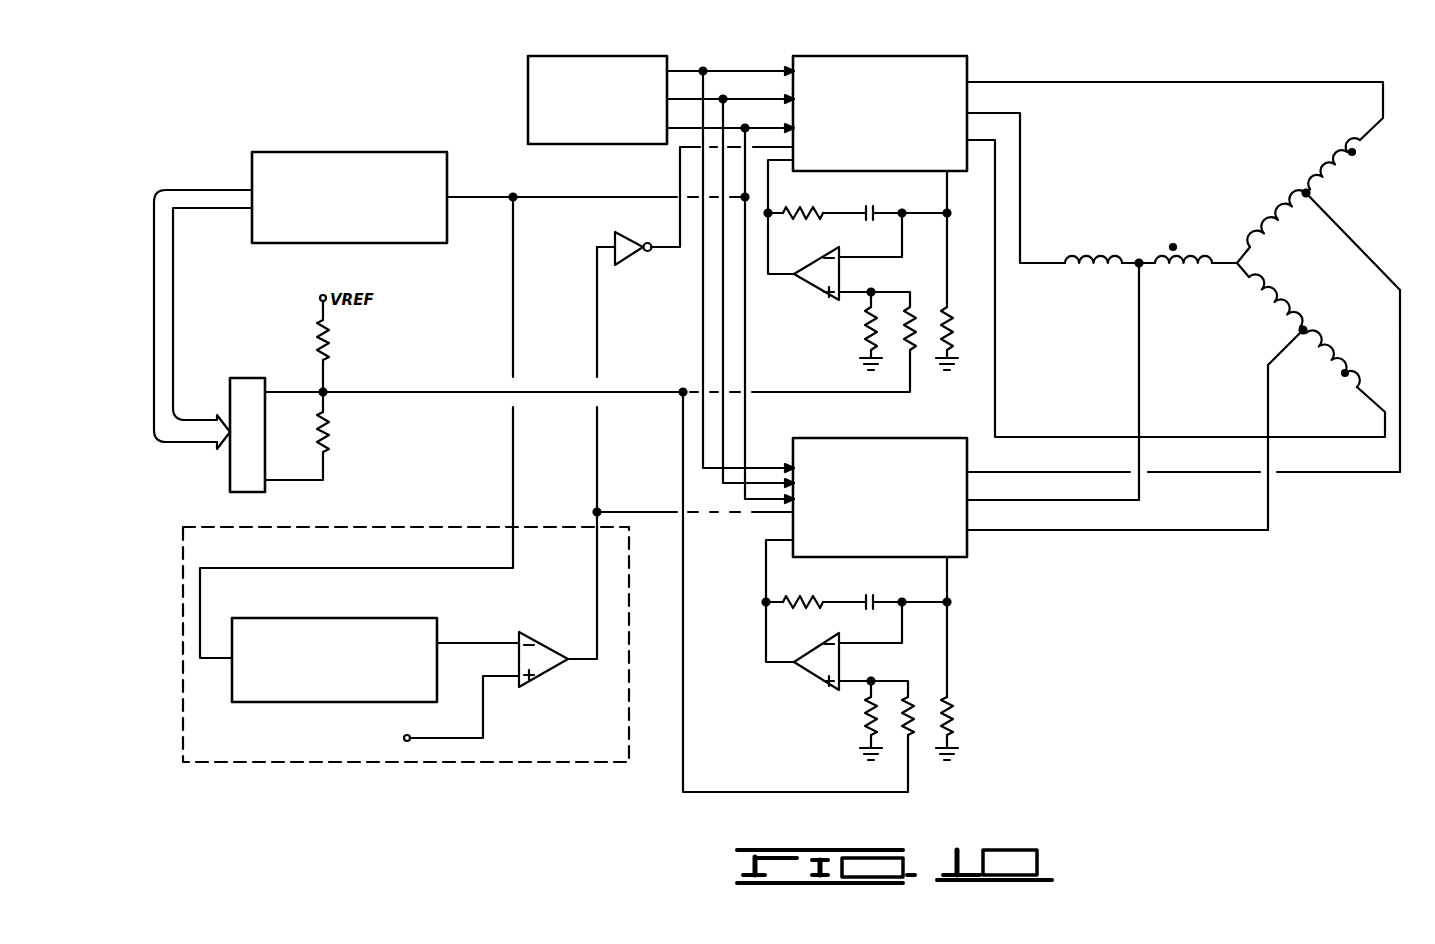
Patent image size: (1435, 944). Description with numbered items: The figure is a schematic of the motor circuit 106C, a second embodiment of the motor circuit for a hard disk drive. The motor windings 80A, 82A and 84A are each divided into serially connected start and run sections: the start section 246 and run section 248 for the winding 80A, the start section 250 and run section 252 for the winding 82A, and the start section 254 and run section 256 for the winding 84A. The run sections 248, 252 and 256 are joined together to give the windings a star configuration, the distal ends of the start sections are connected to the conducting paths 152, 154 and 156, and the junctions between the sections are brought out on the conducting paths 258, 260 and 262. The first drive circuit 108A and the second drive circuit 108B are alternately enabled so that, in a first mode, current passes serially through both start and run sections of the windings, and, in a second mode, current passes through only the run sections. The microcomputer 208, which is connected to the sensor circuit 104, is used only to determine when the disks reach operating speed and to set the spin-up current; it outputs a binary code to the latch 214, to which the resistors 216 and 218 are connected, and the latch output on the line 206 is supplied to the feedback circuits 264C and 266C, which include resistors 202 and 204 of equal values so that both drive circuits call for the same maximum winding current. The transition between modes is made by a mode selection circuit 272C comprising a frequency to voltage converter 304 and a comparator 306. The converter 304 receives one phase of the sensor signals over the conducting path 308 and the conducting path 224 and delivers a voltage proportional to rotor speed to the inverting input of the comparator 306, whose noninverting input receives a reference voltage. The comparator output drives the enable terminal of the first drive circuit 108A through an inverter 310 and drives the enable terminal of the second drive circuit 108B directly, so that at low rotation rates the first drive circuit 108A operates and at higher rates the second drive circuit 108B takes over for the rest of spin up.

The sensor circuit 104 is at (538, 70).
The motor circuit 106C is at (1254, 73).
The first drive circuit 108A is at (950, 70).
The second drive circuit 108B is at (835, 438).
The conducting path 152 is at (1070, 82).
The conducting path 154 is at (1020, 136).
The conducting path 156 is at (995, 180).
The motor winding 80A is at (1352, 152).
The motor winding 82A is at (1345, 373).
The motor winding 84A is at (1173, 247).
The start section 246 is at (1330, 172).
The run section 248 is at (1262, 235).
The start section 250 is at (1322, 350).
The run section 252 is at (1272, 300).
The start section 254 is at (1075, 268).
The run section 256 is at (1165, 268).
The conducting path 258 is at (995, 472).
The conducting path 260 is at (995, 500).
The conducting path 262 is at (995, 530).
The resistor 202 is at (866, 335).
The resistor 204 is at (912, 350).
The reference voltage line 206 is at (412, 392).
The microcomputer 208 is at (358, 162).
The latch 214 is at (255, 378).
The resistor 216 is at (325, 337).
The resistor 218 is at (328, 437).
The conducting path 224 is at (557, 197).
The feedback circuit 264C is at (812, 290).
The feedback circuit 266C is at (806, 677).
The mode selection circuit 272C is at (347, 760).
The frequency to voltage converter 304 is at (313, 703).
The comparator 306 is at (537, 668).
The conducting path 308 is at (510, 292).
The inverter 310 is at (625, 260).